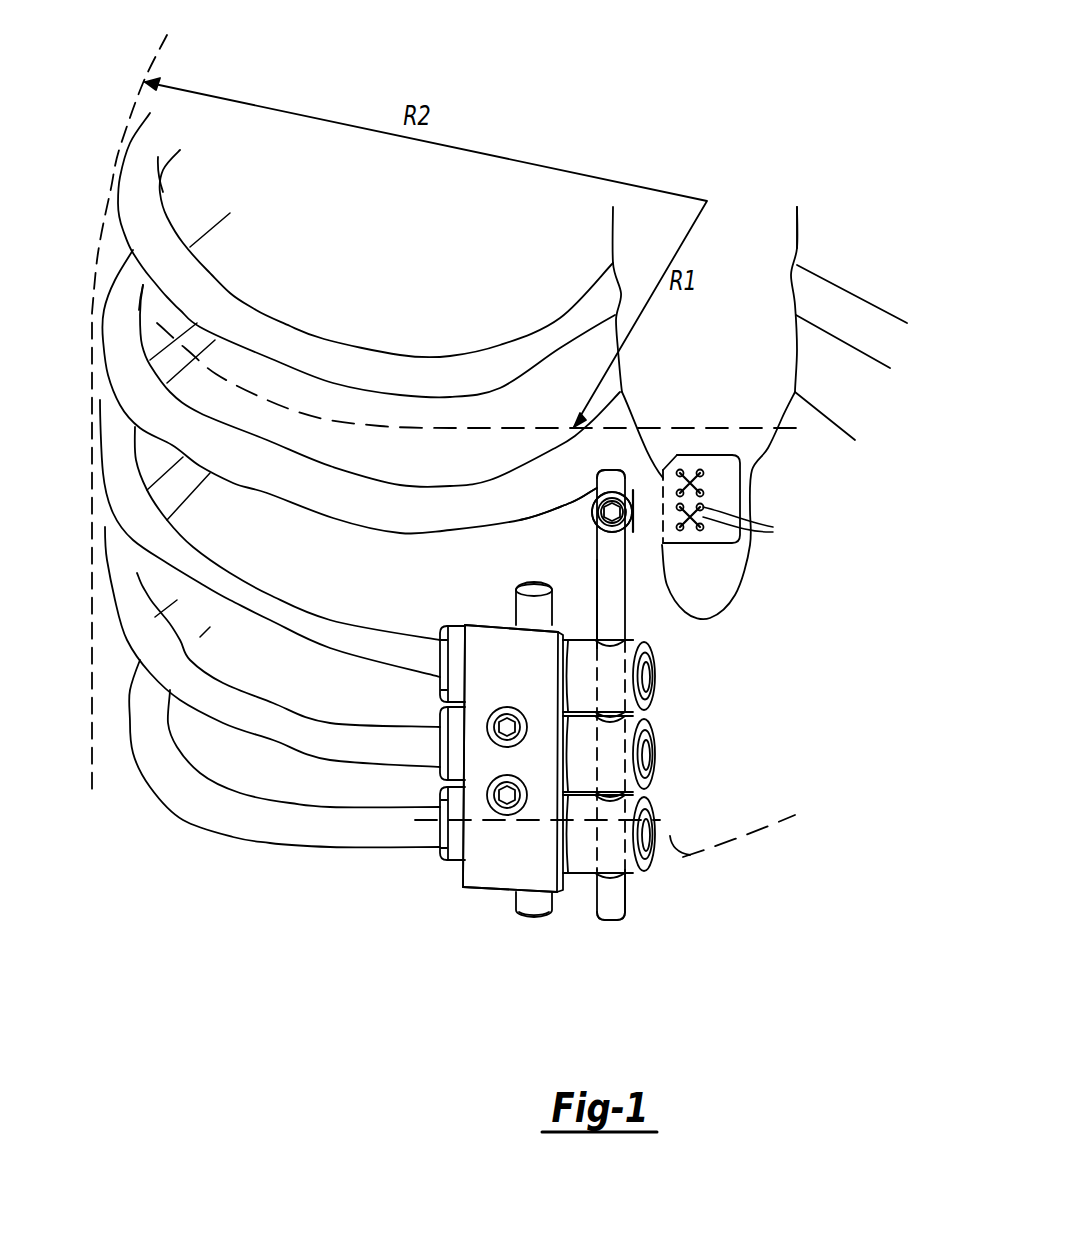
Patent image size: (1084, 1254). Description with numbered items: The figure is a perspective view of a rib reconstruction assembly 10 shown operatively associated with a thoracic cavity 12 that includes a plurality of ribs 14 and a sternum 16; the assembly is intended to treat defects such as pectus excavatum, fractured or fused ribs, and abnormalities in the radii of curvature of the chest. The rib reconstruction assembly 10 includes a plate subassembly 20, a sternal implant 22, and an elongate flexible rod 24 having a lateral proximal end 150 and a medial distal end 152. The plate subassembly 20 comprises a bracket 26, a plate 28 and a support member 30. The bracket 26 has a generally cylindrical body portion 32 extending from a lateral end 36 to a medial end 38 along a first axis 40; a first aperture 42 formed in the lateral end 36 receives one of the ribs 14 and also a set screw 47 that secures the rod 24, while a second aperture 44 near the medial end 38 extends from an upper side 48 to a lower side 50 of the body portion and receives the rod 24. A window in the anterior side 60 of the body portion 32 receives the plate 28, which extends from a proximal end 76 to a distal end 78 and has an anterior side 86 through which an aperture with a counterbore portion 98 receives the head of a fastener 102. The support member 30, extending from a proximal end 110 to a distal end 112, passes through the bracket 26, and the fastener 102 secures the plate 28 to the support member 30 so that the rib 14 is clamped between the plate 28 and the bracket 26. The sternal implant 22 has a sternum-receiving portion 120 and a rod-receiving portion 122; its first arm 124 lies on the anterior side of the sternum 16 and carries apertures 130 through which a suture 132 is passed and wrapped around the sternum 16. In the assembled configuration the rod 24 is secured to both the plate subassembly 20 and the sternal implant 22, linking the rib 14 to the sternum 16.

The rib reconstruction assembly 10 is at (697, 927).
The thoracic cavity 12 is at (820, 232).
The ribs 14 is at (230, 673).
The sternum 16 is at (798, 248).
The plate subassembly 20 is at (461, 772).
The sternal implant 22 is at (743, 472).
The rod 24 is at (558, 674).
The bracket 26 is at (438, 622).
The plate 28 is at (566, 898).
The support member 30 is at (517, 576).
The body portion 32 is at (594, 641).
The lateral end 36 is at (437, 830).
The medial end 38 is at (663, 774).
The first axis 40 is at (798, 815).
The first aperture 42 is at (651, 682).
The second aperture 44 is at (610, 650).
The set screw 47 is at (598, 500).
The upper side 48 is at (655, 625).
The lower side 50 is at (628, 878).
The anterior side 60 is at (434, 660).
The proximal end 76 is at (467, 625).
The distal end 78 is at (483, 890).
The anterior side 86 is at (493, 877).
The counterbore portion 98 is at (511, 727).
The fastener 102 is at (502, 795).
The proximal end 110 is at (534, 580).
The distal end 112 is at (533, 918).
The sternum-receiving portion 120 is at (728, 449).
The rod-receiving portion 122 is at (593, 496).
The first arm 124 is at (720, 483).
The apertures 130 is at (722, 551).
The suture 132 is at (690, 473).
The proximal end 150 is at (615, 466).
The distal end 152 is at (611, 921).